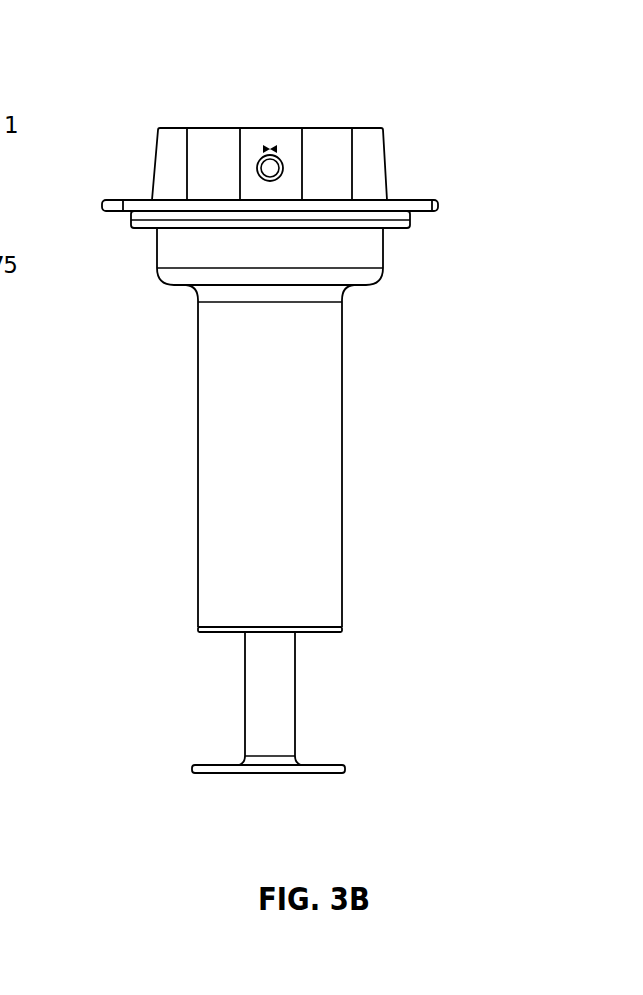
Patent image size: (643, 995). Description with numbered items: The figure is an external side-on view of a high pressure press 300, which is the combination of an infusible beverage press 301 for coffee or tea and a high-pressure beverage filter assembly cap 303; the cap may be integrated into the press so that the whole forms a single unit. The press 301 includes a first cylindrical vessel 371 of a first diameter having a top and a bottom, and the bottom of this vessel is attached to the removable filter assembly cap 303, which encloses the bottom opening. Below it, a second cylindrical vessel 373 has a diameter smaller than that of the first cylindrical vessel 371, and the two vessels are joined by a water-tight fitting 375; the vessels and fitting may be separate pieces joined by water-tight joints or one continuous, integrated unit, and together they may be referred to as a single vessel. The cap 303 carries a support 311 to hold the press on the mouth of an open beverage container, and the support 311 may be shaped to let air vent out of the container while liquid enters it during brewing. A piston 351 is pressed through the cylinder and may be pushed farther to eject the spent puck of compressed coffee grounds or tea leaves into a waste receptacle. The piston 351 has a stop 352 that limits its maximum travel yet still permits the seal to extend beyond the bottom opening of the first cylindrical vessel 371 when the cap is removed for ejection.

The high pressure press 300 is at (467, 38).
The infusible beverage press 301 is at (478, 453).
The high-pressure beverage filter assembly cap 303 is at (488, 197).
The support 311 is at (375, 162).
The first cylindrical vessel 371 is at (140, 243).
The second cylindrical vessel 373 is at (313, 510).
The water-tight fitting 375 is at (395, 285).
The piston 351 is at (277, 731).
The stop 352 is at (345, 767).